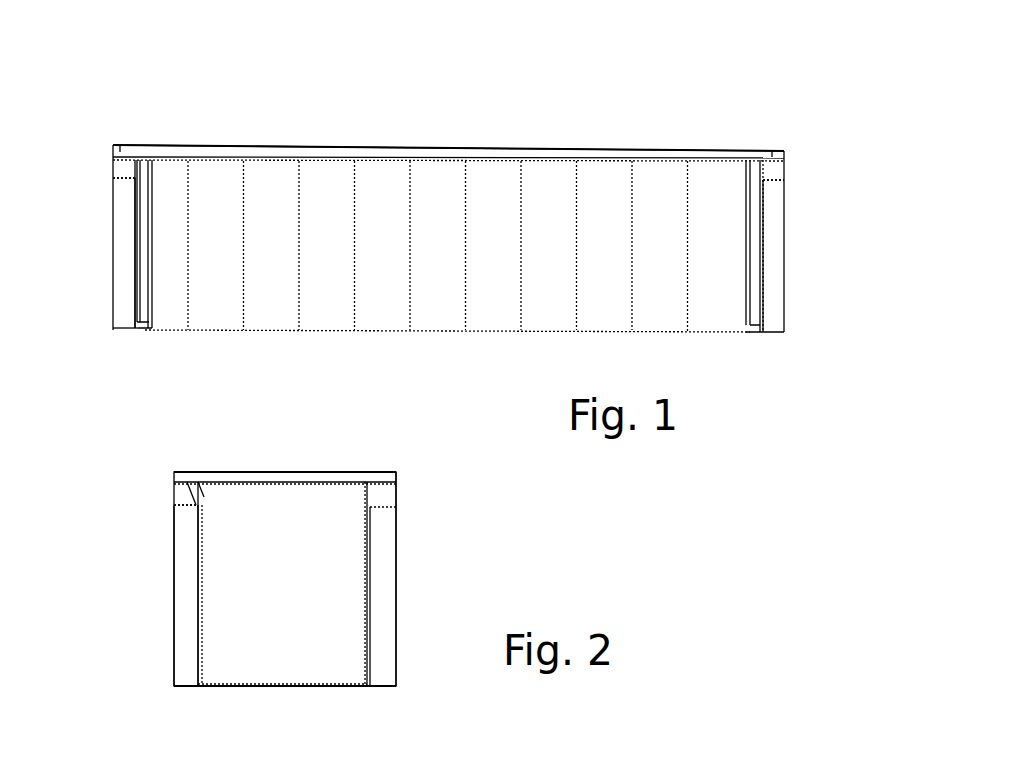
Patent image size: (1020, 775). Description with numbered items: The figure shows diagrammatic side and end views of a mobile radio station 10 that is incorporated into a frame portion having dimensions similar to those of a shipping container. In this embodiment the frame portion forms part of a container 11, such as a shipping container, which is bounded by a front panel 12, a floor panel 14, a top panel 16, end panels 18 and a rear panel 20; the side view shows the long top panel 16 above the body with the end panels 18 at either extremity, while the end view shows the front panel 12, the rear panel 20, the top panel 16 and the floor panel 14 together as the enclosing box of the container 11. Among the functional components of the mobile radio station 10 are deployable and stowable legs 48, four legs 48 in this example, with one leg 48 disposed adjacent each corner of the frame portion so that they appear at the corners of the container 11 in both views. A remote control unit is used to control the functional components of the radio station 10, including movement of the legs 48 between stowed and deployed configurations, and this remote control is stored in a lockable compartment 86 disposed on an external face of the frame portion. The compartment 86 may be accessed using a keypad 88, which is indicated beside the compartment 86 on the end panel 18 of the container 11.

In FIG. 1, the mobile radio station 10 is at (806, 126).
In FIG. 2, the mobile radio station 10 is at (446, 556).
In FIG. 1, the container 11 is at (646, 144).
In FIG. 2, the container 11 is at (273, 466).
In FIG. 2, the front panel 12 is at (173, 492).
In FIG. 2, the floor panel 14 is at (337, 688).
In FIG. 1, the top panel 16 is at (210, 147).
In FIG. 2, the top panel 16 is at (358, 471).
In FIG. 1, the end panels 18 is at (112, 168).
In FIG. 2, the end panels 18 is at (258, 677).
In FIG. 2, the rear panel 20 is at (397, 492).
In FIG. 1, the deployable and stowable legs 48 is at (120, 318).
In FIG. 2, the deployable and stowable legs 48 is at (174, 655).
In FIG. 2, the lockable compartment 86 is at (368, 590).
In FIG. 2, the keypad 88 is at (368, 579).